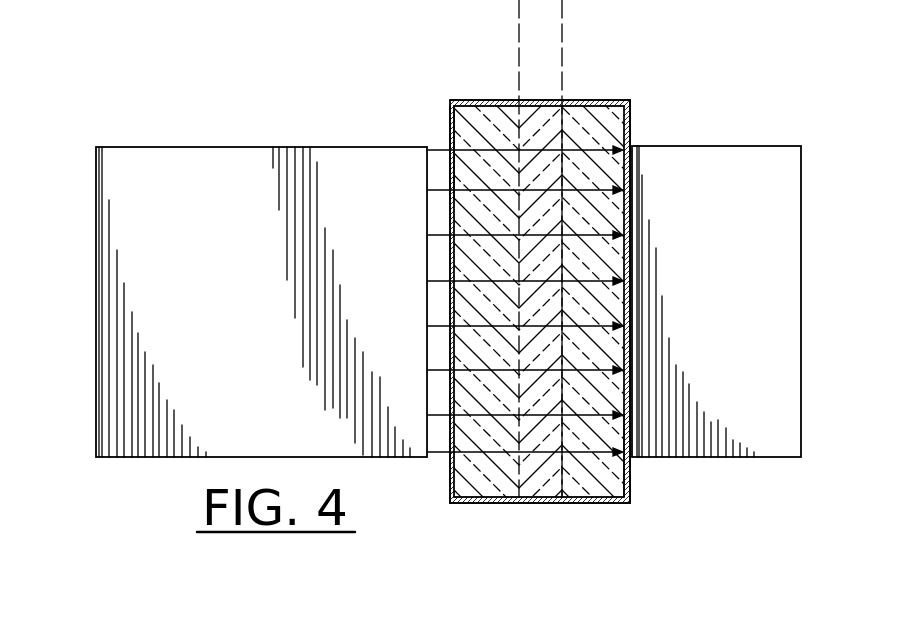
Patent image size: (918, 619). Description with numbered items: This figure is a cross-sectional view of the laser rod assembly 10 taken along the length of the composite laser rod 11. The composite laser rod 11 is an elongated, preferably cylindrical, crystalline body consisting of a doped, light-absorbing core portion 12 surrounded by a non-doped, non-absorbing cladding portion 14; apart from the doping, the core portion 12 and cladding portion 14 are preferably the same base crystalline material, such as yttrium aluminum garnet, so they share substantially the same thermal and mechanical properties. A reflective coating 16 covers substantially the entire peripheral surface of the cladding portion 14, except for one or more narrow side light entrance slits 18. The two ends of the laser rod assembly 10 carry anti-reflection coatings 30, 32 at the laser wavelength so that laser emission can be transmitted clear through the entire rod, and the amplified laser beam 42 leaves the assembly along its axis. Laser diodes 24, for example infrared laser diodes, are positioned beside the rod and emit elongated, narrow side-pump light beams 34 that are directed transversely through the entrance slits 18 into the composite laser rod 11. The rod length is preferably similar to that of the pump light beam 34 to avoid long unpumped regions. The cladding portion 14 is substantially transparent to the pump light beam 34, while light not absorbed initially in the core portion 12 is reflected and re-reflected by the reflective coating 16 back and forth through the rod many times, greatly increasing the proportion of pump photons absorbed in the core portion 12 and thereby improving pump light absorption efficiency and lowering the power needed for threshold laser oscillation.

The laser rod assembly 10 is at (451, 97).
The composite laser rod 11 is at (626, 98).
The core portion 12 is at (628, 115).
The cladding portion 14 is at (632, 468).
The reflective coating 16 is at (563, 133).
The side light entrance slit 18 is at (453, 441).
The laser diode 24 is at (292, 147).
The anti-reflection coating 30 is at (572, 100).
The anti-reflection coating 32 is at (570, 503).
The side-pump light beam 34 is at (470, 188).
The amplified laser beam 42 is at (563, 20).